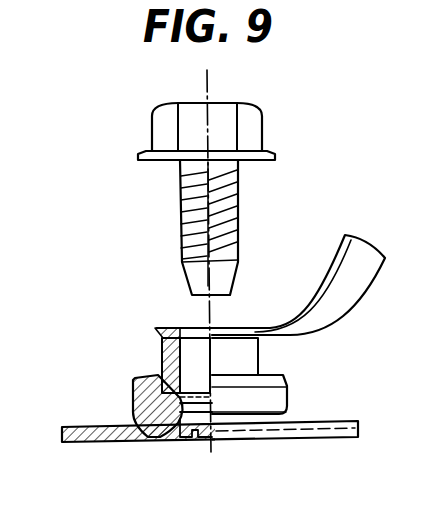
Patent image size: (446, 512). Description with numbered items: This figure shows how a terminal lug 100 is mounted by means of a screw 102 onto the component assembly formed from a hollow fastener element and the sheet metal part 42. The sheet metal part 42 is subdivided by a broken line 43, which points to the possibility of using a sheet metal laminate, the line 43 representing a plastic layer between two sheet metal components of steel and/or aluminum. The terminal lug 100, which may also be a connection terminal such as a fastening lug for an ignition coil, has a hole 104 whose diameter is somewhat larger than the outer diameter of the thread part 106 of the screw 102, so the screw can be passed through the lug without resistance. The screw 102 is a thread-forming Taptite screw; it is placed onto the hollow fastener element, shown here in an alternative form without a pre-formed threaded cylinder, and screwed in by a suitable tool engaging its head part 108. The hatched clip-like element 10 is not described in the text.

The screw 102 is at (191, 198).
The head part 108 is at (244, 135).
The thread part 106 is at (238, 223).
The hole 104 is at (198, 324).
The terminal lug 100 is at (157, 333).
The clip 10 is at (128, 390).
The sheet metal part 42 is at (313, 436).
The broken line 43 is at (100, 447).